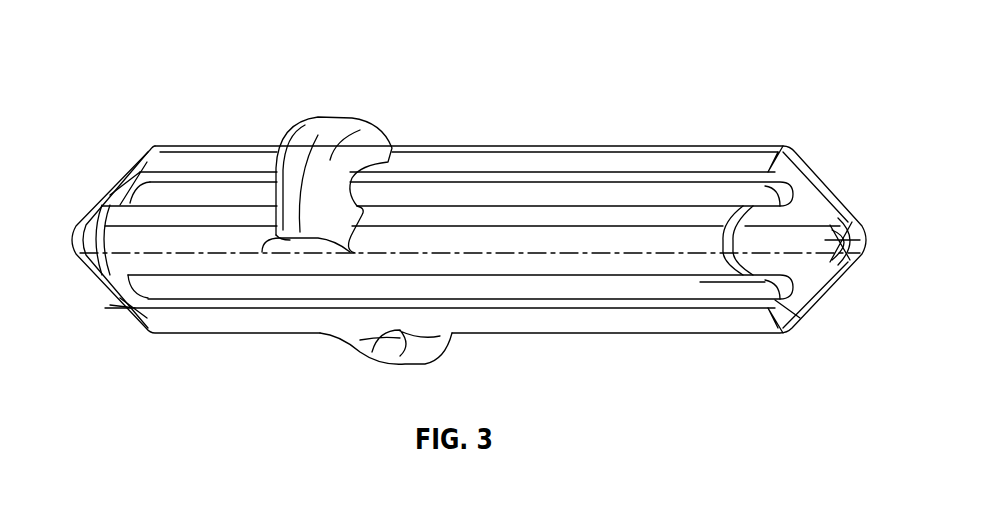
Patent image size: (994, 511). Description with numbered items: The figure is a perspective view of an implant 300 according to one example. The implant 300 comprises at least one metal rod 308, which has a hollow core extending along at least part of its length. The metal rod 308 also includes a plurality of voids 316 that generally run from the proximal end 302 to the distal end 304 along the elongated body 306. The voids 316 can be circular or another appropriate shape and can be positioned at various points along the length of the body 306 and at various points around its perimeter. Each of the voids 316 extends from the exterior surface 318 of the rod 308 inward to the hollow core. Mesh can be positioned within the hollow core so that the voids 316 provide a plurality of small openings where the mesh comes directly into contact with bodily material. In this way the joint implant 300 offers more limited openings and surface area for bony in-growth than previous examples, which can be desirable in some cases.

The implant 300 is at (163, 38).
The proximal end 302 is at (850, 258).
The distal end 304 is at (88, 232).
The elongated body 306 is at (444, 126).
The metal rod 308 is at (620, 168).
The voids 316 is at (508, 188).
The exterior surface 318 is at (805, 313).